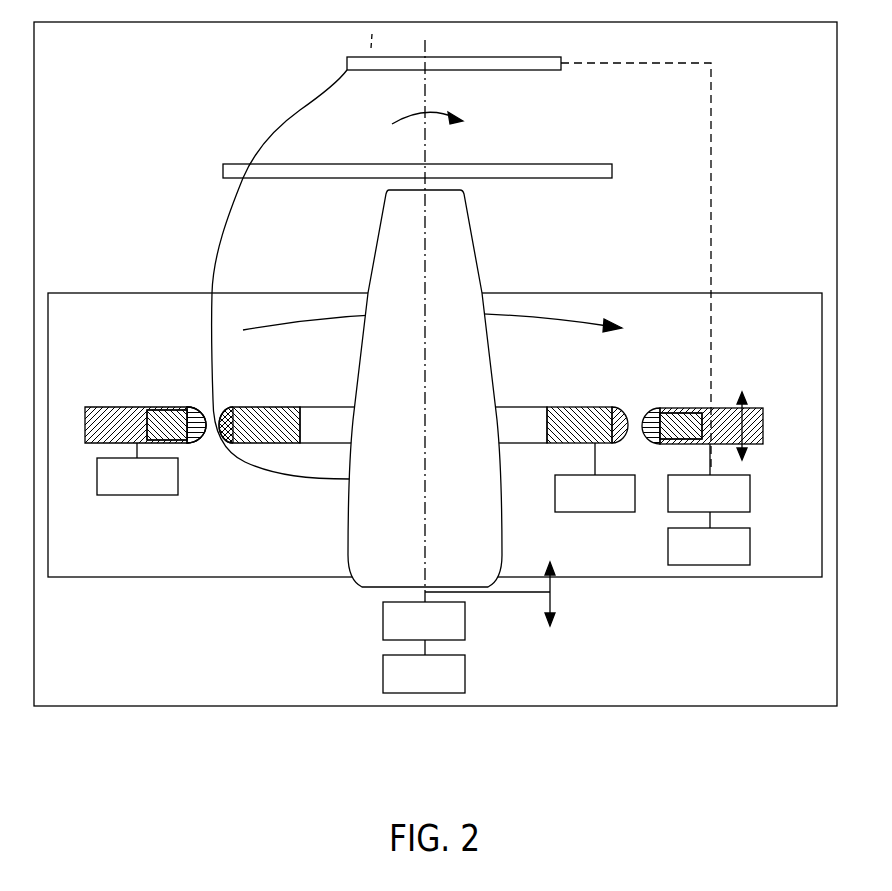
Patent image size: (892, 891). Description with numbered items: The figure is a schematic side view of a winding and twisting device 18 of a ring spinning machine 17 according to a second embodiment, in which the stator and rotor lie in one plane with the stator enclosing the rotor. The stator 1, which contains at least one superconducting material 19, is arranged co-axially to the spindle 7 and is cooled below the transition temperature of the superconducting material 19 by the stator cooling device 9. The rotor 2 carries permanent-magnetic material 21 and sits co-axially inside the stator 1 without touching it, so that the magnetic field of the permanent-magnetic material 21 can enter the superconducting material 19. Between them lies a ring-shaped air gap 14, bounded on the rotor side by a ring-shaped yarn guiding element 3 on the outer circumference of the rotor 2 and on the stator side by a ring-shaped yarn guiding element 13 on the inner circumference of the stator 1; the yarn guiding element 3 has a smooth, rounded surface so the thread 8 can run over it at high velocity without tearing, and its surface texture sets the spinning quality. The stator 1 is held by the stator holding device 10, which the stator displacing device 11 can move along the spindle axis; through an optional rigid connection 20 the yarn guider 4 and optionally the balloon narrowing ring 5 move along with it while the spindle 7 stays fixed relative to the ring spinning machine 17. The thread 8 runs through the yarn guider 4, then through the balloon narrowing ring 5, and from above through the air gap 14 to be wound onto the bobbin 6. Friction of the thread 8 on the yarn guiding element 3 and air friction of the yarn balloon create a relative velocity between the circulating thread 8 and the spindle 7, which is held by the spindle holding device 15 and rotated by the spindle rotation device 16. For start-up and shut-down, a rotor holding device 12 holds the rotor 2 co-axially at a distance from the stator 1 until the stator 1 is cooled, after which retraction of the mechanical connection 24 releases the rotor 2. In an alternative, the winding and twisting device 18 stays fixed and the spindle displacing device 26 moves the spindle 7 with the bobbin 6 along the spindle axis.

The stator 1 is at (145, 398).
The rotor 2 is at (268, 398).
The yarn guiding element 3 is at (620, 407).
The yarn guider 4 is at (347, 63).
The balloon narrowing ring 5 is at (539, 164).
The bobbin 6 is at (474, 245).
The spindle 7 is at (428, 183).
The thread 8 is at (302, 110).
The stator cooling device 9 is at (136, 496).
The stator holding device 10 is at (750, 493).
The stator displacing device 11 is at (750, 547).
The rotor holding device 12 is at (593, 512).
The yarn guiding element 13 is at (647, 408).
The air gap 14 is at (210, 450).
The spindle holding device 15 is at (372, 628).
The spindle rotation device 16 is at (383, 617).
The ring spinning machine 17 is at (257, 707).
The winding and twisting device 18 is at (152, 578).
The superconducting material 19 is at (165, 410).
The rigid connection 20 is at (711, 167).
The permanent-magnetic material 21 is at (266, 443).
The mechanical connection 24 is at (595, 458).
The spindle displacing device 26 is at (383, 667).